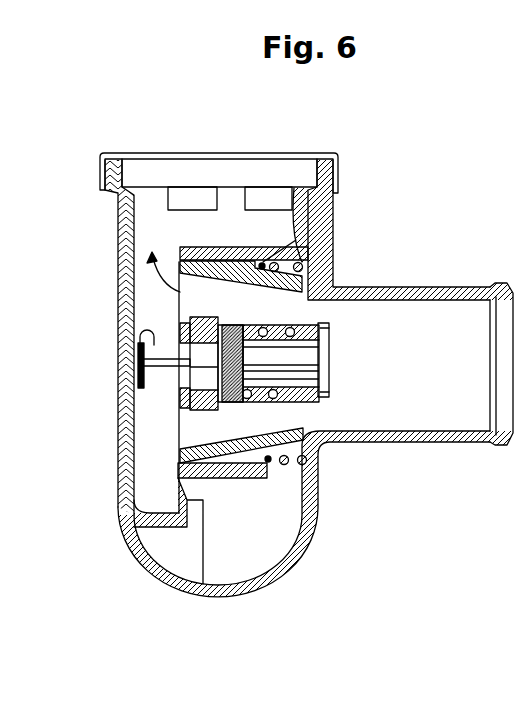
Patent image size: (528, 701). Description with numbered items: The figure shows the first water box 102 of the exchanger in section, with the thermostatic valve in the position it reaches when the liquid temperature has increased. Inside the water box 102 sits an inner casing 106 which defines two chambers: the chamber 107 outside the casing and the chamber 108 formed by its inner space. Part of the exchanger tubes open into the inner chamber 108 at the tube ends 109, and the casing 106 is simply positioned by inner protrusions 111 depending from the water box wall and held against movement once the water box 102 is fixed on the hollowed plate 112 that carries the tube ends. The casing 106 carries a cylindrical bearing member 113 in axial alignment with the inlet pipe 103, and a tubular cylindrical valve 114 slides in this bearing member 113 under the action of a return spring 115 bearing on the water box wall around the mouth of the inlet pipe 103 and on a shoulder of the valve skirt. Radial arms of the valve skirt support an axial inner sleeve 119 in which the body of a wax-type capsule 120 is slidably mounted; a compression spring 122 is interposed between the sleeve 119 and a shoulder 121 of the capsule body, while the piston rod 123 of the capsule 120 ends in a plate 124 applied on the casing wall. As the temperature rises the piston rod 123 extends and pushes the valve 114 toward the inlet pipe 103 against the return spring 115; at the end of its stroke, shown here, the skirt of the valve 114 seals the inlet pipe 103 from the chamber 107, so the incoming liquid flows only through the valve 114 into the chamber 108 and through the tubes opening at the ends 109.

The water box 102 is at (92, 200).
The inlet pipe 103 is at (418, 292).
The inner casing 106 is at (138, 277).
The chamber 107 is at (293, 500).
The chamber 108 is at (280, 220).
The tube ends 109 is at (254, 214).
The inner protrusions 111 is at (173, 550).
The hollowed plate 112 is at (257, 127).
The cylindrical bearing member 113 is at (243, 479).
The tubular cylindrical valve 114 is at (235, 277).
The return spring 115 is at (305, 265).
The axial inner sleeve 119 is at (330, 396).
The capsule 120 is at (303, 359).
The shoulder 121 is at (200, 388).
The compression spring 122 is at (272, 403).
The piston rod 123 is at (160, 370).
The plate 124 is at (150, 332).